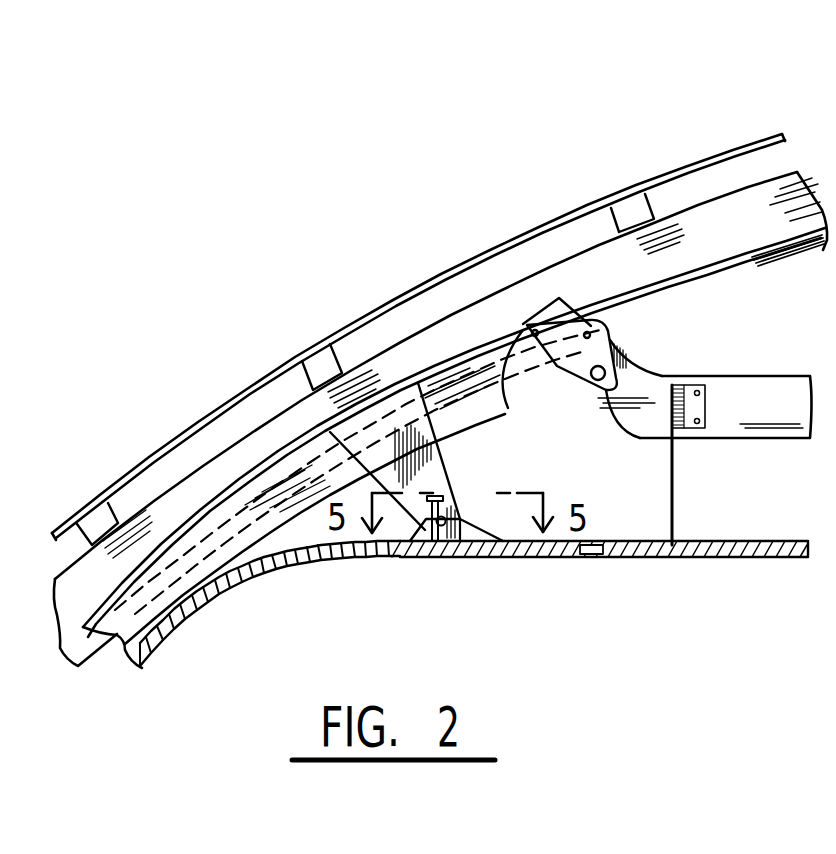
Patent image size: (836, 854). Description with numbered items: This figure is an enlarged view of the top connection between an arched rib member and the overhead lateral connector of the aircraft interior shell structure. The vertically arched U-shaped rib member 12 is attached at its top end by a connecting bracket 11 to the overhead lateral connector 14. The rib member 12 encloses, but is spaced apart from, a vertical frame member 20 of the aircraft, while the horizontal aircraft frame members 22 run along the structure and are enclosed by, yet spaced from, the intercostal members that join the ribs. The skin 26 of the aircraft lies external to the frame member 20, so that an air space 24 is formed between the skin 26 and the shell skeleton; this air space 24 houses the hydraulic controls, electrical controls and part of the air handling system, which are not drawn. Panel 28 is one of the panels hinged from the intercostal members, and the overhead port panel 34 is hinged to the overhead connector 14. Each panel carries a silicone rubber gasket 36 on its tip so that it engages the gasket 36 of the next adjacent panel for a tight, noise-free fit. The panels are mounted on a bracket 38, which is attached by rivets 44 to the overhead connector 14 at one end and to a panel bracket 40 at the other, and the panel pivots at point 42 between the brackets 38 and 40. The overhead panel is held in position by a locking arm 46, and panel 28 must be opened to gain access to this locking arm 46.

The connecting bracket 11 is at (617, 347).
The arched rib member 12 is at (468, 400).
The overhead lateral connector 14 is at (735, 375).
The vertical frame member 20 is at (765, 262).
The horizontal aircraft frame member 22 is at (105, 523).
The air space 24 is at (520, 262).
The skin 26 is at (713, 158).
The panel 28 is at (203, 617).
The overhead port panel 34 is at (712, 553).
The silicone rubber gasket 36 is at (605, 556).
The bracket 38 is at (433, 473).
The panel bracket 40 is at (478, 542).
The pivot point 42 is at (438, 542).
The rivets 44 is at (508, 408).
The locking arm 46 is at (676, 490).